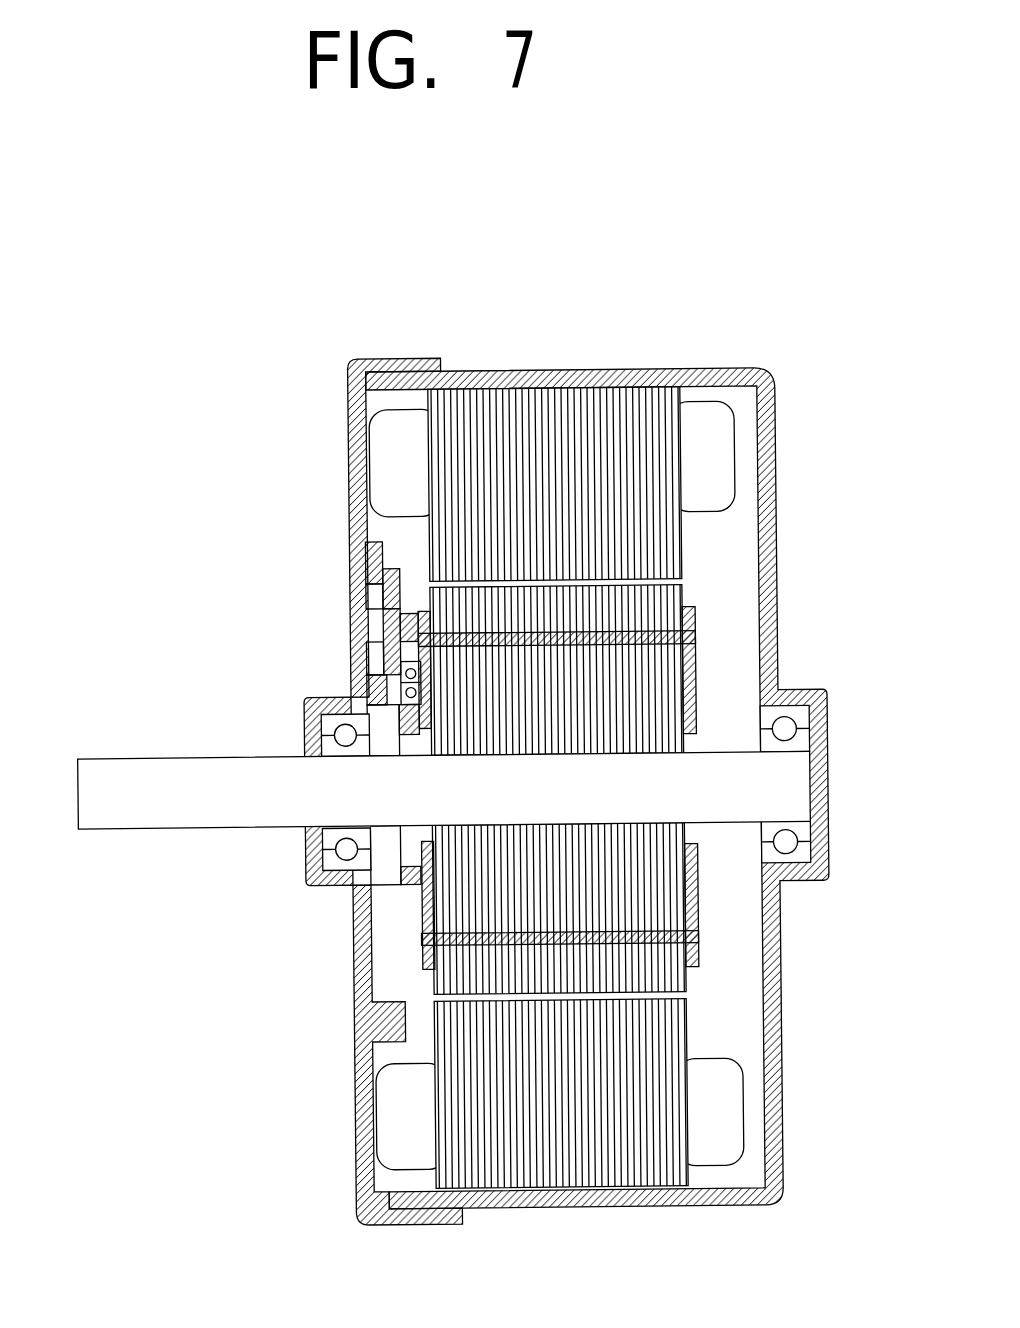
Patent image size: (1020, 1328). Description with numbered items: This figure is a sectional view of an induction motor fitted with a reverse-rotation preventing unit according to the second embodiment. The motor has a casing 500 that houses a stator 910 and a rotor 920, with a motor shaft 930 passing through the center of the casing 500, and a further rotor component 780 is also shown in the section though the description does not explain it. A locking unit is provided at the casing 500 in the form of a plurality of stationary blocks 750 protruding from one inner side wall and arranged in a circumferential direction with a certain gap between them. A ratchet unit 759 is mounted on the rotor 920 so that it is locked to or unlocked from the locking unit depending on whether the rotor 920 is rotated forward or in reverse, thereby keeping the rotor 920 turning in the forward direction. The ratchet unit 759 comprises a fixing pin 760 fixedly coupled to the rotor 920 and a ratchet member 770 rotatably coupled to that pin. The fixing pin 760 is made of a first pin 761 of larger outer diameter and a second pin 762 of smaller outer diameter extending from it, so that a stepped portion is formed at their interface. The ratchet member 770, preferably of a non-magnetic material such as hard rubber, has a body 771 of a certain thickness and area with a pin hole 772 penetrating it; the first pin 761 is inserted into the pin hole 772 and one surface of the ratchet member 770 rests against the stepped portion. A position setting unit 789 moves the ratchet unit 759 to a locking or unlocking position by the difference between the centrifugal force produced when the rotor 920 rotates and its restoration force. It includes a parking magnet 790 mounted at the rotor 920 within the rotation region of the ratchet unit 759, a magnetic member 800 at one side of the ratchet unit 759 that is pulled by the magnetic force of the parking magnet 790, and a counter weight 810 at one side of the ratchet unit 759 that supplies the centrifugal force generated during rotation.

The casing 500 is at (752, 337).
The stationary block 750 is at (380, 548).
The ratchet unit 759 is at (219, 558).
The fixing pin 760 is at (249, 558).
The first pin 761 is at (392, 572).
The second pin 762 is at (400, 600).
The ratchet member 770 is at (258, 605).
The body 771 is at (400, 650).
The pin hole 772 is at (405, 618).
The rotor 780 is at (407, 893).
The position setting unit 789 is at (415, 744).
The parking magnet 790 is at (385, 675).
The magnetic member 800 is at (310, 700).
The counter weight 810 is at (400, 682).
The stator 910 is at (712, 520).
The rotor 920 is at (710, 625).
The motor shaft 930 is at (107, 838).